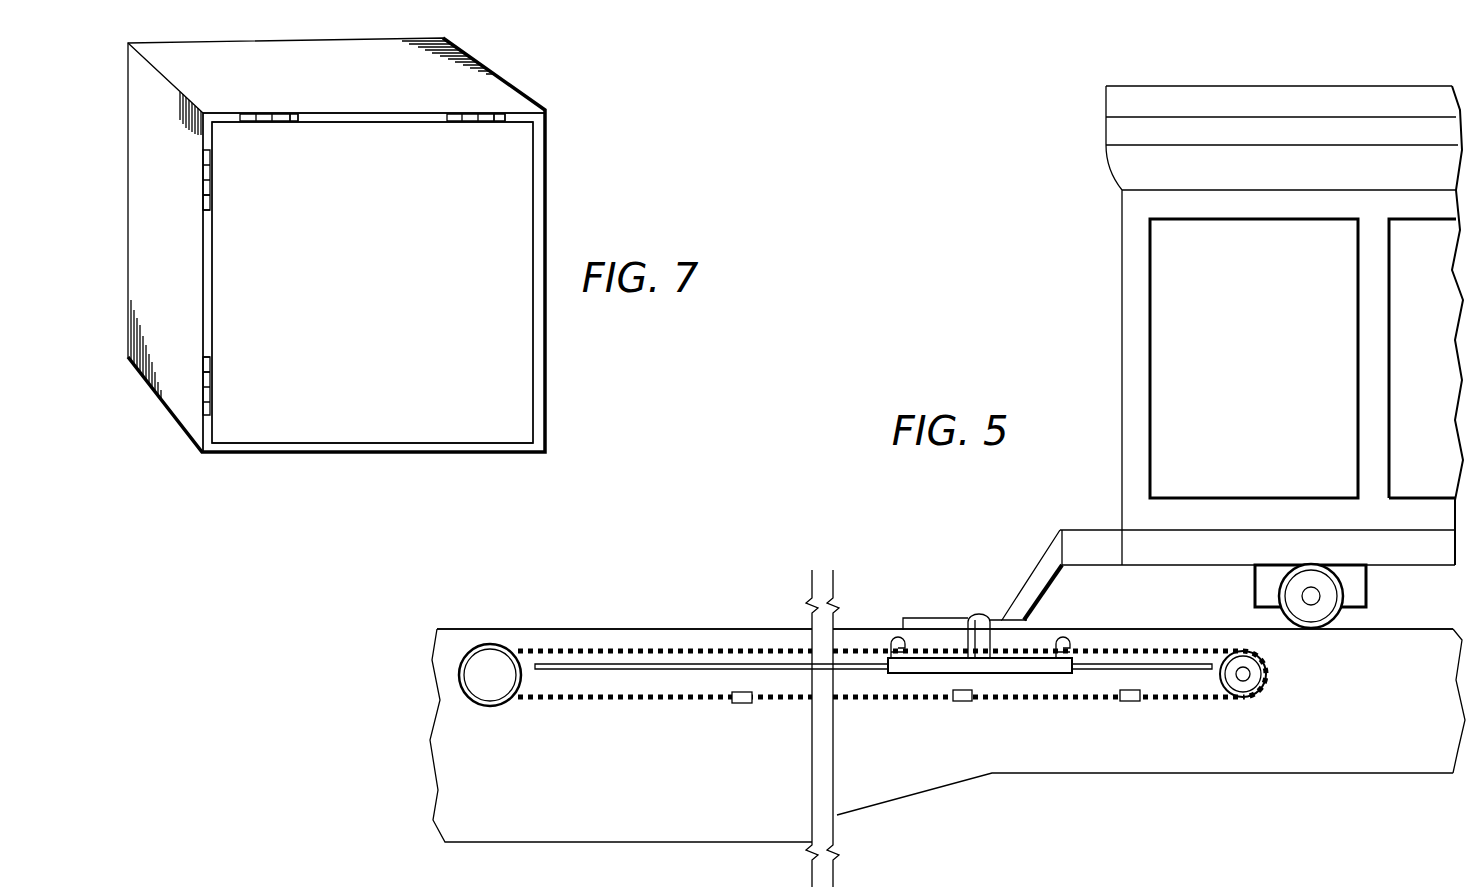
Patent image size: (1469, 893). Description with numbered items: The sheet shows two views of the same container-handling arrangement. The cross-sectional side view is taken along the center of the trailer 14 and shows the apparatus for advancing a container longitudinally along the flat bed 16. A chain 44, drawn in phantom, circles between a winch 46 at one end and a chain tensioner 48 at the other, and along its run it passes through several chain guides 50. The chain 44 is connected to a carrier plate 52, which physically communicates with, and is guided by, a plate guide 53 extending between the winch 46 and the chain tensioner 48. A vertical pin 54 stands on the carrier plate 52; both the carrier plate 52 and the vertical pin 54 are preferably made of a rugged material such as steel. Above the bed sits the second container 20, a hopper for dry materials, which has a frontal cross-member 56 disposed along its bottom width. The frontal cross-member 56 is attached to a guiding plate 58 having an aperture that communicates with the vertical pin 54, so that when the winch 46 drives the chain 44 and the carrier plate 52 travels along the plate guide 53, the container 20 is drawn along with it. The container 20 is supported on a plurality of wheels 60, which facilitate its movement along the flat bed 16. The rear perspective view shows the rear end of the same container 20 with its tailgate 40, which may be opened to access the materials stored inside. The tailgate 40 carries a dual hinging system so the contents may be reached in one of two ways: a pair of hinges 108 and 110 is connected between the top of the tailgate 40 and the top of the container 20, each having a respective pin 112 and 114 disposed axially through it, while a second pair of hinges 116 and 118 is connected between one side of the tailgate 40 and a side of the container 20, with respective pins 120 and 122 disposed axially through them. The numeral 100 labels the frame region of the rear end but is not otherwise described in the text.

In FIG. 5, the trailer 14 is at (1268, 773).
In FIG. 5, the flat bed 16 is at (638, 629).
In FIG. 7, the second container 20 is at (151, 266).
In FIG. 5, the second container 20 is at (1122, 258).
In FIG. 7, the tailgate 40 is at (370, 289).
In FIG. 5, the chain 44 is at (568, 698).
In FIG. 5, the winch 46 is at (496, 708).
In FIG. 5, the chain tensioner 48 is at (1267, 675).
In FIG. 5, the chain guides 50 is at (742, 704).
In FIG. 5, the carrier plate 52 is at (1026, 675).
In FIG. 5, the plate guide 53 is at (650, 671).
In FIG. 5, the vertical pin 54 is at (978, 614).
In FIG. 5, the frontal cross-member 56 is at (1097, 530).
In FIG. 5, the guiding plate 58 is at (1040, 572).
In FIG. 5, the wheels 60 is at (1345, 596).
In FIG. 7, the door frame 100 is at (490, 447).
In FIG. 7, the hinge 108 is at (268, 113).
In FIG. 7, the hinge 110 is at (487, 122).
In FIG. 7, the pin 112 is at (300, 122).
In FIG. 7, the pin 114 is at (455, 113).
In FIG. 7, the hinge 116 is at (202, 173).
In FIG. 7, the hinge 118 is at (212, 394).
In FIG. 7, the pin 120 is at (210, 207).
In FIG. 7, the pin 122 is at (211, 357).